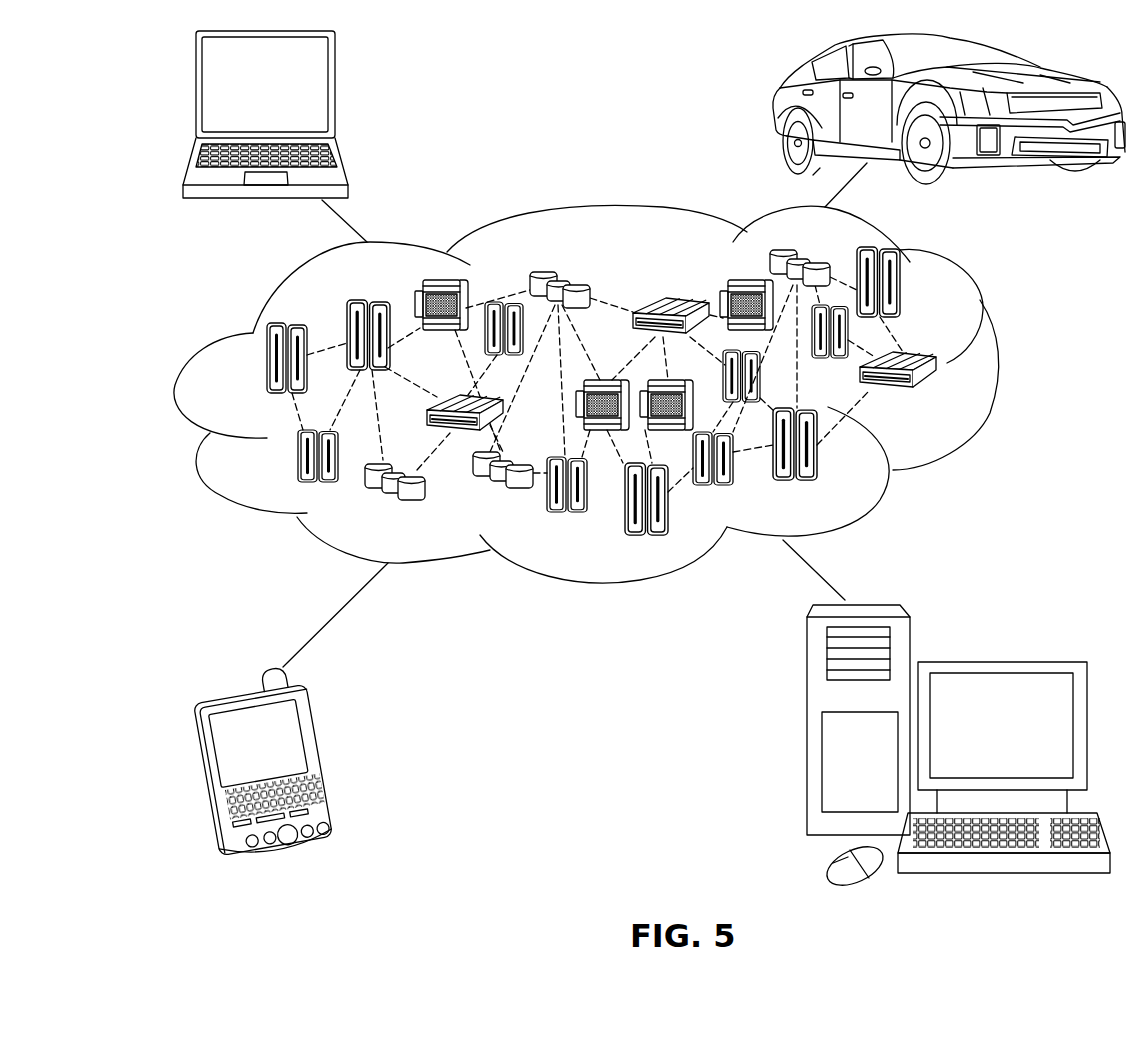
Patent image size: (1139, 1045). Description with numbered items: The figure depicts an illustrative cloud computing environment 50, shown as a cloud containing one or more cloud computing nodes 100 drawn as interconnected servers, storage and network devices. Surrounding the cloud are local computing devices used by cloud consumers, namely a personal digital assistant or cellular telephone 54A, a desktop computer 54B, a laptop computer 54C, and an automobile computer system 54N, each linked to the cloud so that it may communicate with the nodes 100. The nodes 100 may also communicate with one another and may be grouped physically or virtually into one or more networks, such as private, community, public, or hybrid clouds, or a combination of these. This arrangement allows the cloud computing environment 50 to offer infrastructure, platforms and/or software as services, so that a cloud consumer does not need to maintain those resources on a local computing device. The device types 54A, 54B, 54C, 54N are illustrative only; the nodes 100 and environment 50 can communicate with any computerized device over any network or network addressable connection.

The cloud computing environment 50 is at (620, 394).
The personal digital assistant or cellular telephone 54A is at (322, 757).
The desktop computer 54B is at (998, 660).
The laptop computer 54C is at (334, 96).
The automobile computer system 54N is at (778, 108).
The cloud computing nodes 100 is at (943, 400).